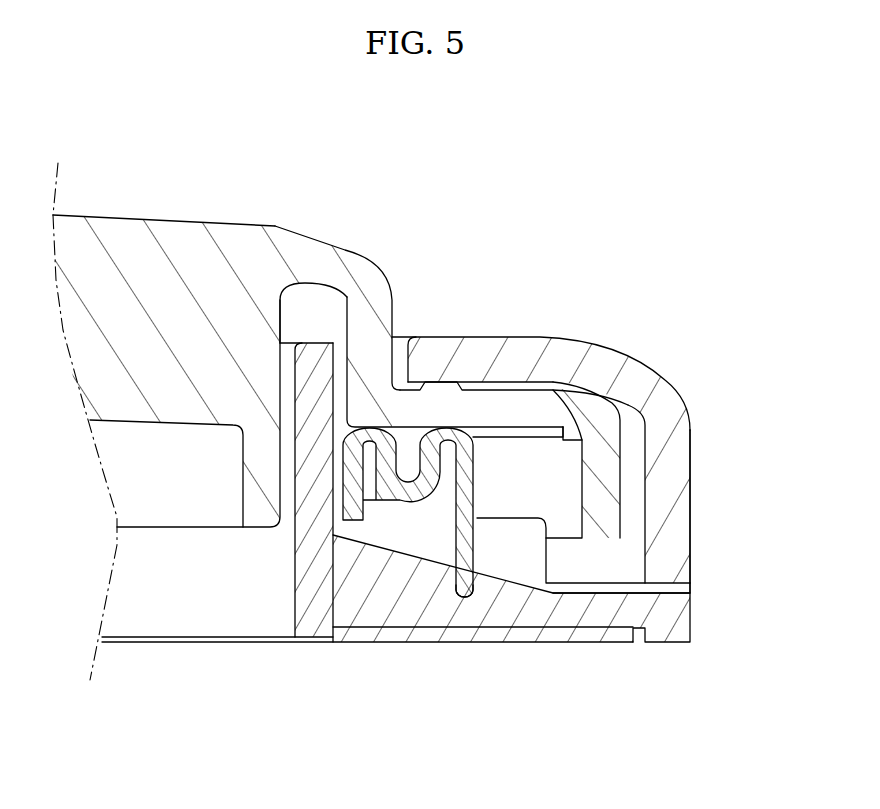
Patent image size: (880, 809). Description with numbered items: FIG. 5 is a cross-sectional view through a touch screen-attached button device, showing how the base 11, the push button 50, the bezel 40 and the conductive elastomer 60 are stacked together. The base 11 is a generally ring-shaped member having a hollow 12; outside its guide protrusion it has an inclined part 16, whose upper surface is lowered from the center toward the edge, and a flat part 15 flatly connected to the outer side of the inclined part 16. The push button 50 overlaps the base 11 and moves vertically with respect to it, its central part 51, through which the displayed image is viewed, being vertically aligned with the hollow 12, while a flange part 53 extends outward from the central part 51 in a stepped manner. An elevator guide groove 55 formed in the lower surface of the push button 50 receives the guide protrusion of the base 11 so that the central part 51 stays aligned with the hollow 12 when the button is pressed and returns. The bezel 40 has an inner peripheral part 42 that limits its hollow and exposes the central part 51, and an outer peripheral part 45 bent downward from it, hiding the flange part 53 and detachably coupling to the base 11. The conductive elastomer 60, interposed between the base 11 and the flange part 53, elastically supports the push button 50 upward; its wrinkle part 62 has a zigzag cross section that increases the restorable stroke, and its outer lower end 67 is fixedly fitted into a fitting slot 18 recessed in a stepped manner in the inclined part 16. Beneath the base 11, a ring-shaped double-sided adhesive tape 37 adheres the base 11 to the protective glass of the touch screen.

The base 11 is at (694, 626).
The hollow 12 is at (172, 603).
The flat part 15 is at (338, 293).
The inclined part 16 is at (492, 577).
The fitting slot 18 is at (534, 386).
The double-sided adhesive tape 37 is at (582, 645).
The bezel 40 is at (672, 378).
The inner peripheral part 42 is at (450, 336).
The outer peripheral part 45 is at (693, 530).
The push button 50 is at (223, 218).
The central part 51 is at (127, 217).
The flange part 53 is at (538, 390).
The elevator guide groove 55 is at (328, 310).
The conductive elastomer 60 is at (470, 421).
The wrinkle part 62 is at (425, 452).
The outer lower end 67 is at (462, 600).